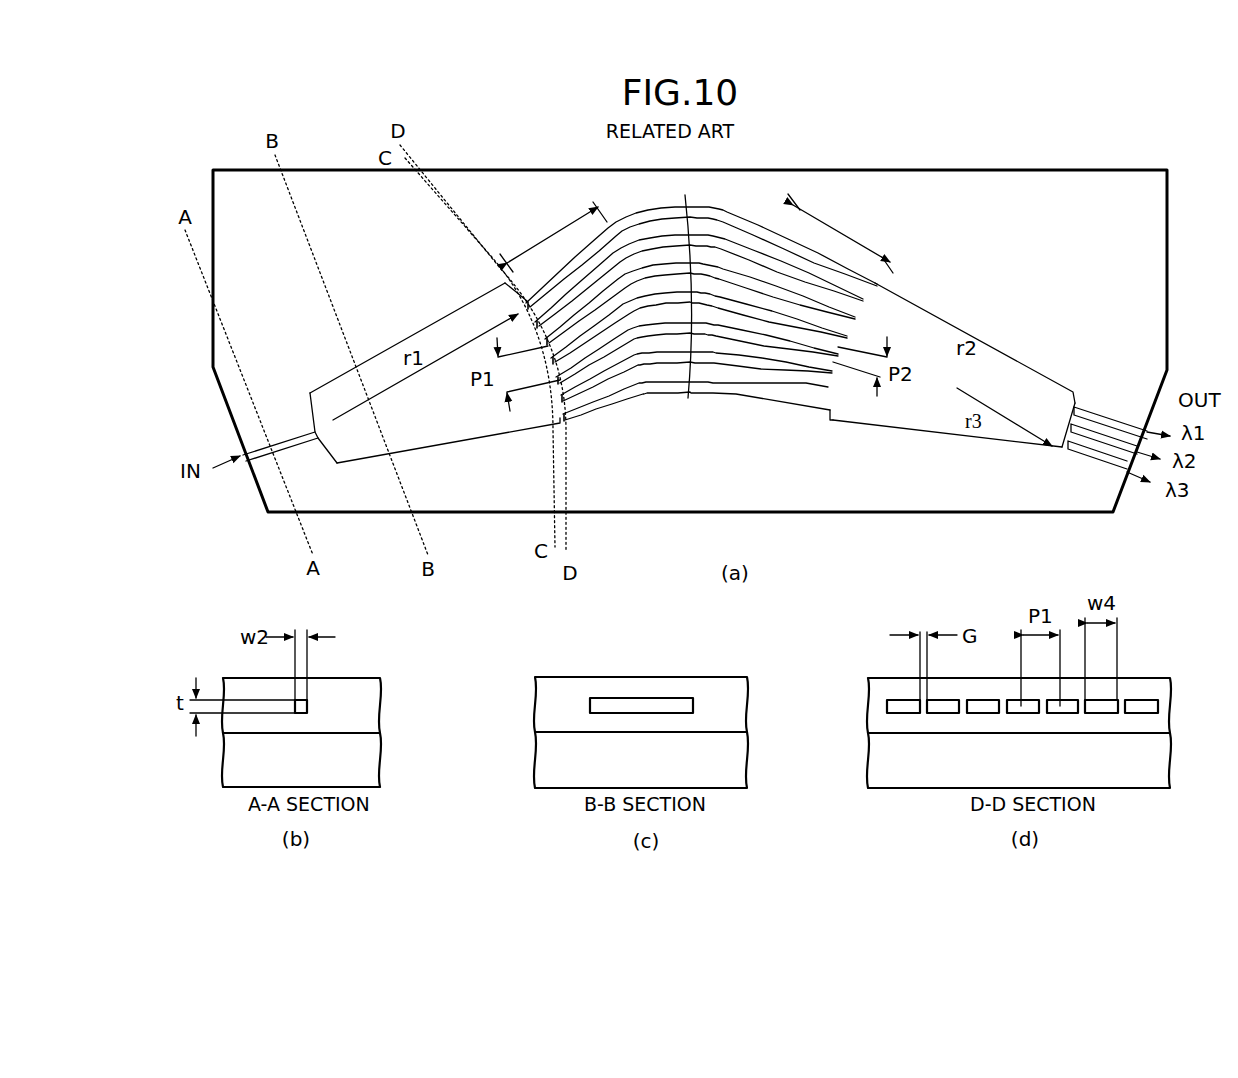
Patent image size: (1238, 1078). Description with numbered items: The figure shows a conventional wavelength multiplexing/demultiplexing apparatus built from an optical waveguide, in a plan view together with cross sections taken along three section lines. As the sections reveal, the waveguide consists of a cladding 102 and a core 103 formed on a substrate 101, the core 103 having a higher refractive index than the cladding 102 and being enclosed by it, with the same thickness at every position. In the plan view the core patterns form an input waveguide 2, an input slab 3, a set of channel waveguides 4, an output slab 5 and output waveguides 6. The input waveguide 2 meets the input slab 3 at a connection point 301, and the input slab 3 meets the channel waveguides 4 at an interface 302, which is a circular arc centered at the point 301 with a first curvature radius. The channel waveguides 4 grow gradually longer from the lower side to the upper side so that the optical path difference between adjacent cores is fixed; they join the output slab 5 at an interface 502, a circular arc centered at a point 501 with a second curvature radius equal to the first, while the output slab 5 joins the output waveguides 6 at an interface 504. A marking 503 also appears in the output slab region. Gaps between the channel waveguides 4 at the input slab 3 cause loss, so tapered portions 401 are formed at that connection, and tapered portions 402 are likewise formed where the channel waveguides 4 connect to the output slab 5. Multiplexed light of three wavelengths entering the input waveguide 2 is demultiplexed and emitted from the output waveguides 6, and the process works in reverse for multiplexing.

The input waveguide 2 is at (262, 447).
The input slab 3 is at (440, 435).
The connection point 301 is at (322, 434).
The interface 302 is at (565, 418).
The channel waveguides 4 is at (688, 398).
The tapered portions 401 is at (548, 234).
The tapered portions 402 is at (862, 243).
The output slab 5 is at (943, 440).
The point 501 is at (1058, 428).
The interface 502 is at (824, 412).
The center line of slab waveguide 503 is at (968, 370).
The interface 504 is at (1047, 462).
The output waveguides 6 is at (1117, 403).
The substrate 101 is at (365, 752).
The cladding 102 is at (365, 708).
The core 103 is at (305, 706).